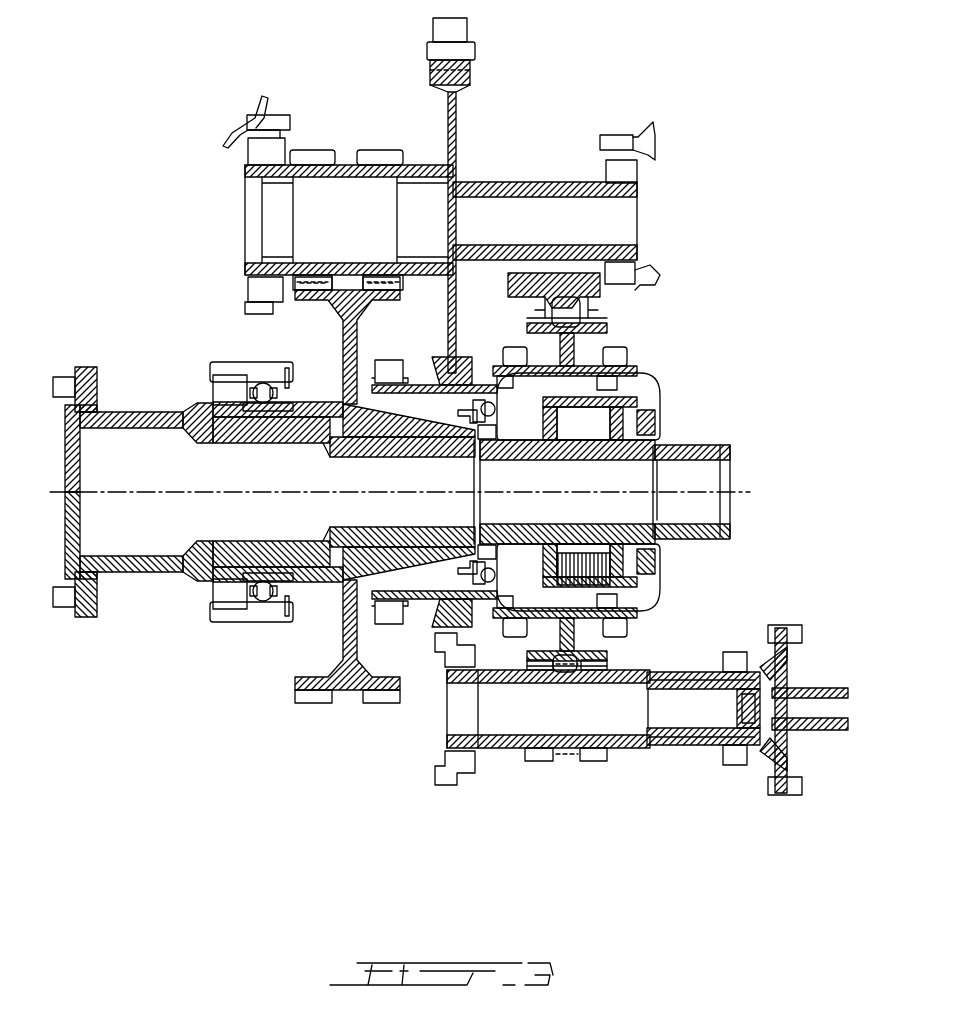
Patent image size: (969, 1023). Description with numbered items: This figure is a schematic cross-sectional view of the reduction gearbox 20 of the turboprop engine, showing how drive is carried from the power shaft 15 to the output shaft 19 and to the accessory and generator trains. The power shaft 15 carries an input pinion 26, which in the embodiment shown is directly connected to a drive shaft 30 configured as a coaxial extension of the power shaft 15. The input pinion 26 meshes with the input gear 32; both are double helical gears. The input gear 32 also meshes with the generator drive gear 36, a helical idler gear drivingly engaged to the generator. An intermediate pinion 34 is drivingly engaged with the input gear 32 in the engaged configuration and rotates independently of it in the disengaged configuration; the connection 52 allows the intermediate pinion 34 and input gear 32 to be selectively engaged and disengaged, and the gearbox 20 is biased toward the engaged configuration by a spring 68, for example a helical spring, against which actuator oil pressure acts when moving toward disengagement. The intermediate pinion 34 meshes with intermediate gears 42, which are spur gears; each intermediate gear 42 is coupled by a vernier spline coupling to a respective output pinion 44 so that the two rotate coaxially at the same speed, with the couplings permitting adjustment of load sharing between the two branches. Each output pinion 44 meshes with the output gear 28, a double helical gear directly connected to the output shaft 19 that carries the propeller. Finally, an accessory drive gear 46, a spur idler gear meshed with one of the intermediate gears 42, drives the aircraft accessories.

The power shaft 15 is at (823, 687).
The output shaft 19 is at (161, 560).
The reduction gearbox 20 is at (737, 147).
The input pinion 26 is at (593, 758).
The output gear 28 is at (308, 700).
The drive shaft 30 is at (673, 743).
The input gear 32 is at (590, 323).
The intermediate pinion 34 is at (635, 397).
The generator drive gear 36 is at (585, 308).
The intermediate gear 42 is at (456, 150).
The output pinion 44 is at (317, 152).
The accessory drive gear 46 is at (442, 33).
The connection 52 is at (622, 368).
The spring 68 is at (570, 568).